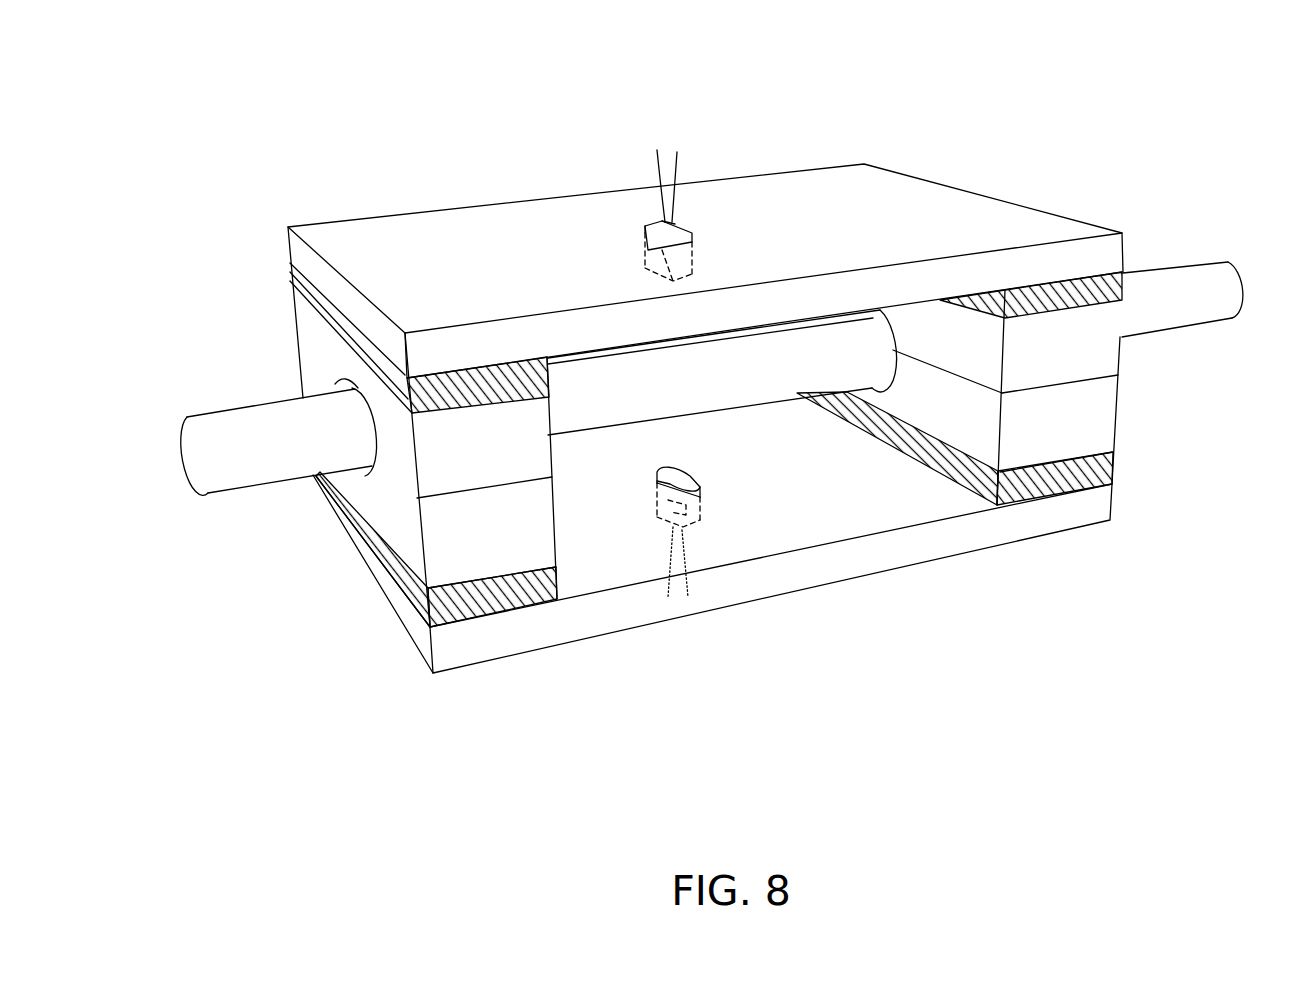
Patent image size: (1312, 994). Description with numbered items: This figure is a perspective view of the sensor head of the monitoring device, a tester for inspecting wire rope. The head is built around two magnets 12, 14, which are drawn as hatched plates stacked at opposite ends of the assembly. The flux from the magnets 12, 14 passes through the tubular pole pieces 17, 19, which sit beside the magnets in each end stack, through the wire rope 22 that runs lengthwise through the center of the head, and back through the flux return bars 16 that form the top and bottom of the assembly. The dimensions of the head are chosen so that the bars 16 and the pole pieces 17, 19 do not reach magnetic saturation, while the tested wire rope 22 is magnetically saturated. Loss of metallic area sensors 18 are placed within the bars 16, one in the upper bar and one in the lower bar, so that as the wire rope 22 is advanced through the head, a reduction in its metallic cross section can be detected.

The magnet 12 is at (1065, 288).
The magnet 14 is at (292, 275).
The flux return bar 16 is at (433, 230).
The tubular pole piece 17 is at (1102, 342).
The loss of metallic area sensor 18 is at (677, 165).
The tubular pole piece 19 is at (307, 330).
The wire rope 22 is at (262, 430).